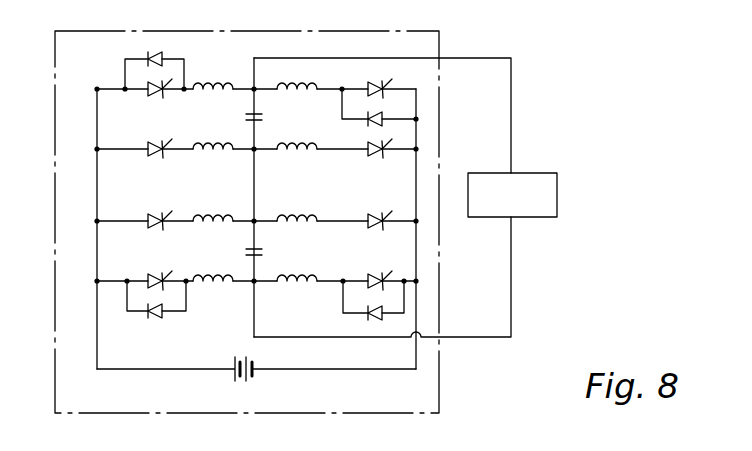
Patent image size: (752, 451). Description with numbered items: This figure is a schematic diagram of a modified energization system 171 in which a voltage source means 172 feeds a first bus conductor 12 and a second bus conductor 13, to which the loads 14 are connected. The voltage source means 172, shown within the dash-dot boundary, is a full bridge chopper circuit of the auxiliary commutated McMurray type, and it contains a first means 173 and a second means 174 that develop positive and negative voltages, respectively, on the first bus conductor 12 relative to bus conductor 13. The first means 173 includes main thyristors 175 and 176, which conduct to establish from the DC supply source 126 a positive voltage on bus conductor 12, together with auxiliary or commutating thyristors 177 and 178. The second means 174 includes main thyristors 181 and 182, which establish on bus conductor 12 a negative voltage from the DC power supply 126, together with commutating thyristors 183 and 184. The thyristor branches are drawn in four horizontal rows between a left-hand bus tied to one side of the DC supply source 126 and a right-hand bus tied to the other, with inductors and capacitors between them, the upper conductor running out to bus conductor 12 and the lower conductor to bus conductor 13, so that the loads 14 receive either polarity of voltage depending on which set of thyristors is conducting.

The first bus conductor 12 is at (495, 58).
The bus conductor 13 is at (477, 338).
The loads 14 is at (538, 172).
The DC supply source 126 is at (233, 372).
The energization system 171 is at (498, 410).
The voltage source means 172 is at (441, 40).
The first means 173 is at (205, 198).
The second means 174 is at (377, 203).
The main thyristor 175 is at (148, 96).
The main thyristor 176 is at (371, 276).
The commutating thyristor 177 is at (148, 153).
The commutating thyristor 178 is at (370, 228).
The main thyristor 181 is at (370, 86).
The main thyristor 182 is at (150, 276).
The commutating thyristor 183 is at (370, 156).
The commutating thyristor 184 is at (149, 228).